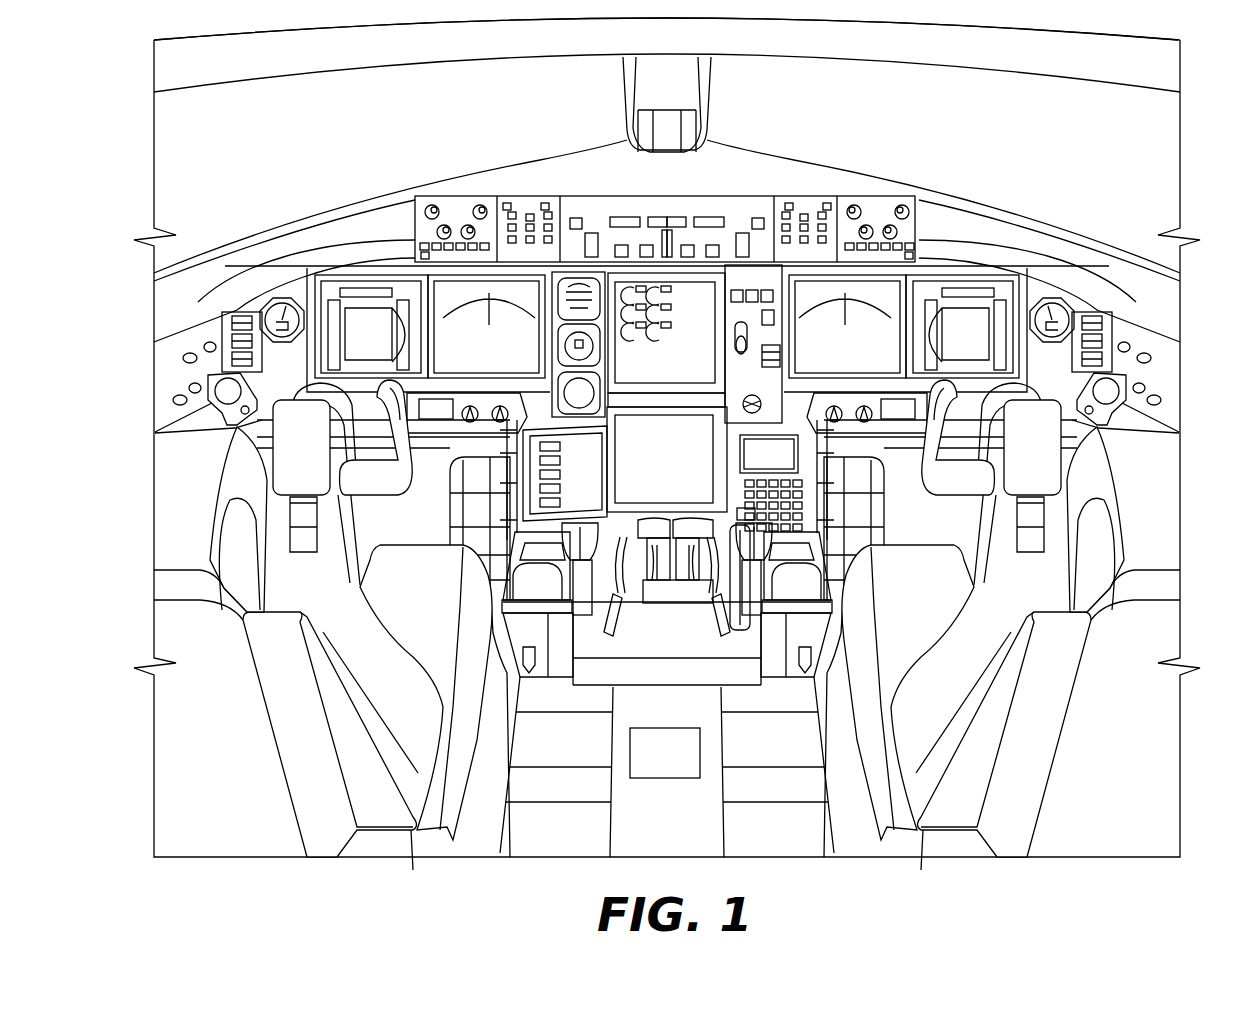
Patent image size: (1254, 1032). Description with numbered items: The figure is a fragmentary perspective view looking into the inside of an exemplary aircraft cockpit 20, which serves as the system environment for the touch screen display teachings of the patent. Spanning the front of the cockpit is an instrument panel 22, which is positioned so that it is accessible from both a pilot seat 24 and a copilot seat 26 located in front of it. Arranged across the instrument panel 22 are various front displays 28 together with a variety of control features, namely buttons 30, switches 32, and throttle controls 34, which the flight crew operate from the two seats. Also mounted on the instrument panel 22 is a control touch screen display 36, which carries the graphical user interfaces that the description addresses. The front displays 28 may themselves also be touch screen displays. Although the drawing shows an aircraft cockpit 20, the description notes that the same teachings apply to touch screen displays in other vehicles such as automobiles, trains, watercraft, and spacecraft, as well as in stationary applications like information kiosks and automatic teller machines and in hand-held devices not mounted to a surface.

The aircraft cockpit 20 is at (1142, 172).
The instrument panel 22 is at (318, 247).
The pilot seat 24 is at (172, 510).
The copilot seat 26 is at (1162, 510).
The front displays 28 is at (379, 348).
The buttons 30 is at (806, 210).
The switches 32 is at (745, 296).
The throttle controls 34 is at (700, 525).
The control touch screen display 36 is at (583, 465).